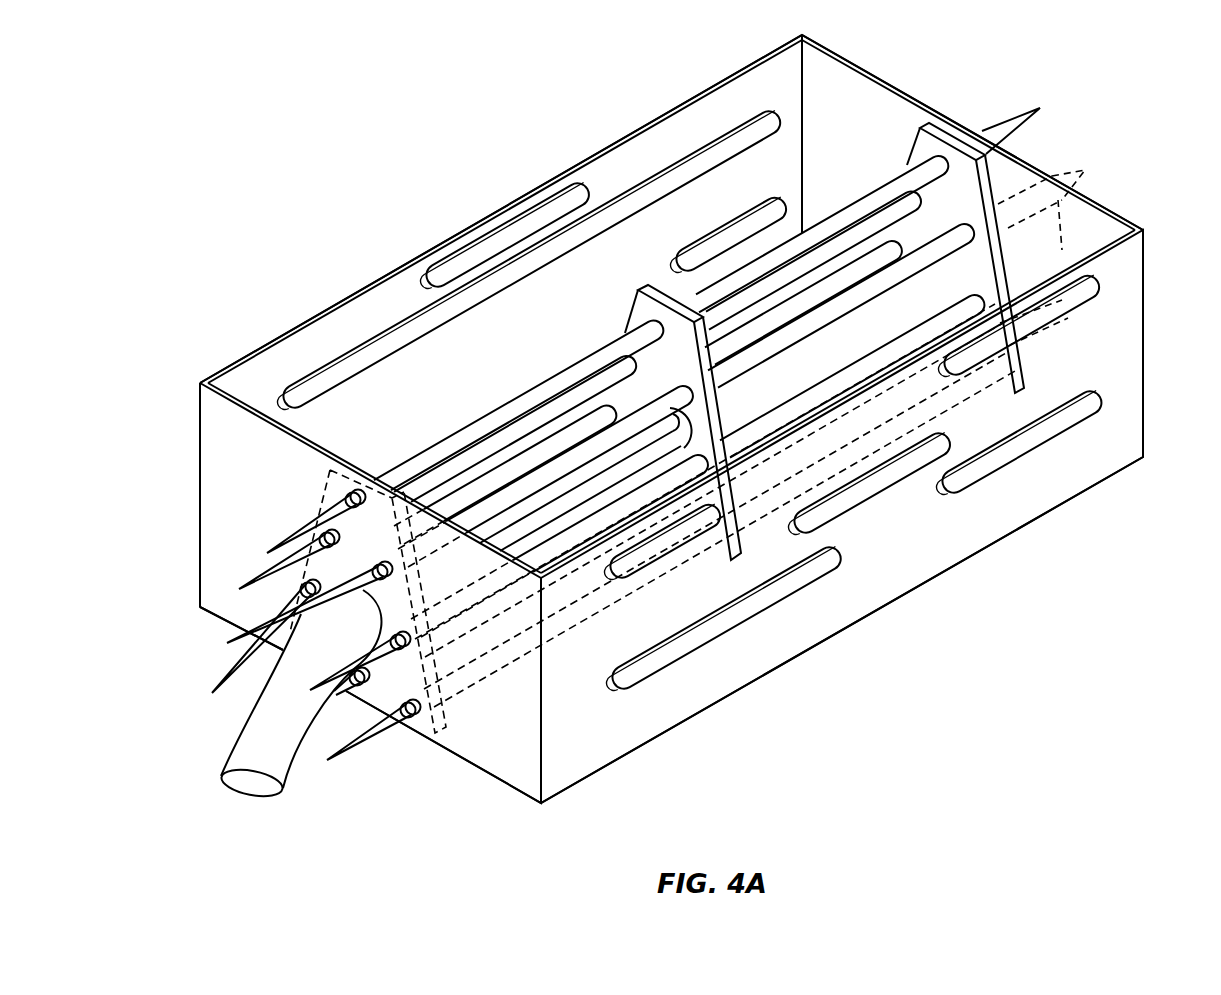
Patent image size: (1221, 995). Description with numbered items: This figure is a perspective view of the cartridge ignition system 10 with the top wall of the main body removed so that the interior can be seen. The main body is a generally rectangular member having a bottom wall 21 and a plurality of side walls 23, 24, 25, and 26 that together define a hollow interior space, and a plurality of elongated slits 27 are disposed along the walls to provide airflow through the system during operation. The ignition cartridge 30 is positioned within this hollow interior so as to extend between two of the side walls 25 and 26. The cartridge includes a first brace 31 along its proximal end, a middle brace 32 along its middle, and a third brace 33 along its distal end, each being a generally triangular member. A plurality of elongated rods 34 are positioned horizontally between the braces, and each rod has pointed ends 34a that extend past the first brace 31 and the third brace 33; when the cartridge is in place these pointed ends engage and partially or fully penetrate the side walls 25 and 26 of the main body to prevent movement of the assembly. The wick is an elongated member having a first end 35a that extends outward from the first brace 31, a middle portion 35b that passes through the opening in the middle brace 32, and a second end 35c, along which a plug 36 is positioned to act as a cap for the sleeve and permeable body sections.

The cartridge ignition system 10 is at (298, 224).
The bottom wall 21 is at (800, 287).
The side wall 23 is at (832, 620).
The side wall 24 is at (605, 150).
The side wall 25 is at (225, 440).
The side wall 26 is at (842, 56).
The elongated slits 27 is at (478, 283).
The ignition cartridge 30 is at (488, 382).
The first brace 31 is at (340, 470).
The middle brace 32 is at (660, 292).
The third brace 33 is at (934, 122).
The elongated rods 34 is at (470, 480).
The pointed ends 34a is at (1030, 128).
The first end 35a is at (258, 795).
The middle portion 35b is at (640, 440).
The second end 35c is at (892, 238).
The plug 36 is at (1068, 260).